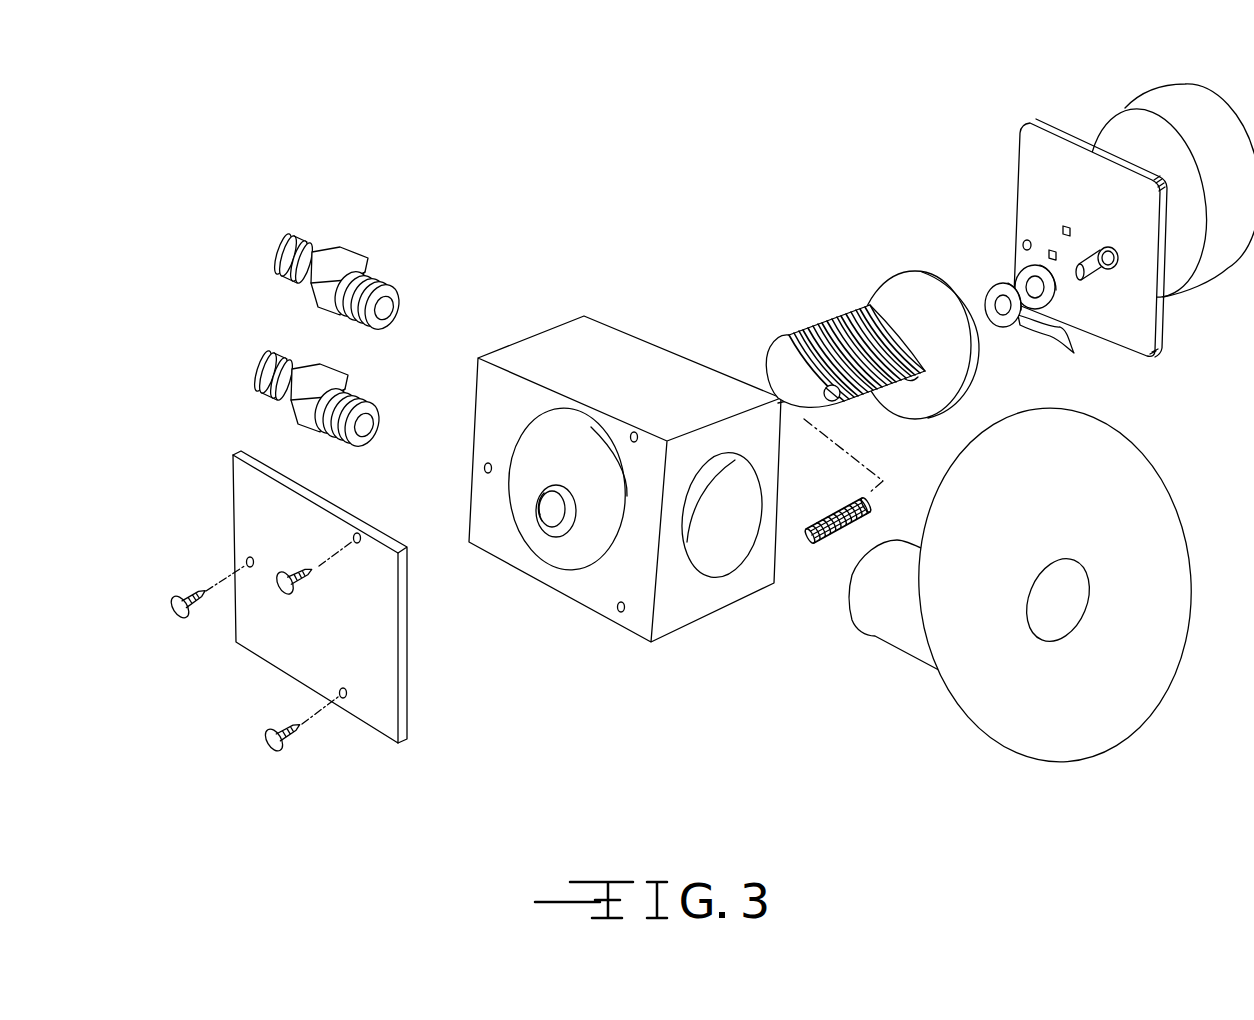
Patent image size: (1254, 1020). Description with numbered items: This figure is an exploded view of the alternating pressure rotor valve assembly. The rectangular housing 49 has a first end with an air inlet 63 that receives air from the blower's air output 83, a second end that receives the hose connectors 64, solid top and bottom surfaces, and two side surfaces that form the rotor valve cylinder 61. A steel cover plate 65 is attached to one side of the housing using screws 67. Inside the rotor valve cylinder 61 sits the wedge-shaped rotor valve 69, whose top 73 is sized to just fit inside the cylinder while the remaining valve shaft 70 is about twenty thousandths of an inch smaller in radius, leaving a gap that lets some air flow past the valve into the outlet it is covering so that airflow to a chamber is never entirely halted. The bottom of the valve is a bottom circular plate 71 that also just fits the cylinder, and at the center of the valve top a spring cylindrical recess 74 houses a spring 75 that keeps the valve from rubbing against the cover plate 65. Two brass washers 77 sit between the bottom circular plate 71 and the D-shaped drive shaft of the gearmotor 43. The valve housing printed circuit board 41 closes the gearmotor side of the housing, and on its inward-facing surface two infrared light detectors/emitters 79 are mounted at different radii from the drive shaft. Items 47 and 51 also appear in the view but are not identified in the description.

The valve housing printed circuit board 41 is at (1013, 180).
The gearmotor 43 is at (1123, 110).
The threaded bore 47 is at (560, 528).
The housing 49 is at (586, 336).
The disk 51 is at (1077, 728).
The rotor valve cylinder 61 is at (538, 408).
The air inlet 63 is at (697, 564).
The hose connectors 64 is at (259, 368).
The cover plate 65 is at (413, 745).
The screws 67 is at (268, 745).
The rotor valve 69 is at (806, 321).
The valve shaft 70 is at (818, 324).
The bottom circular plate 71 is at (906, 270).
The valve top 73 is at (840, 402).
The spring cylindrical recess 74 is at (880, 405).
The spring 75 is at (821, 557).
The brass washers 77 is at (1068, 345).
The infrared light detectors/emitters 79 is at (1060, 230).
The blower air output 83 is at (912, 637).